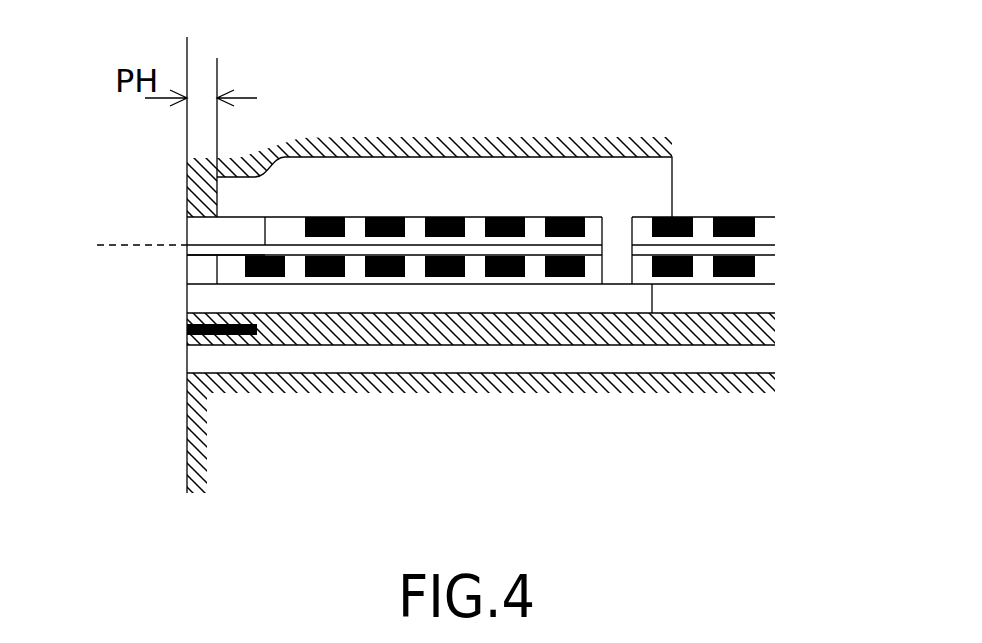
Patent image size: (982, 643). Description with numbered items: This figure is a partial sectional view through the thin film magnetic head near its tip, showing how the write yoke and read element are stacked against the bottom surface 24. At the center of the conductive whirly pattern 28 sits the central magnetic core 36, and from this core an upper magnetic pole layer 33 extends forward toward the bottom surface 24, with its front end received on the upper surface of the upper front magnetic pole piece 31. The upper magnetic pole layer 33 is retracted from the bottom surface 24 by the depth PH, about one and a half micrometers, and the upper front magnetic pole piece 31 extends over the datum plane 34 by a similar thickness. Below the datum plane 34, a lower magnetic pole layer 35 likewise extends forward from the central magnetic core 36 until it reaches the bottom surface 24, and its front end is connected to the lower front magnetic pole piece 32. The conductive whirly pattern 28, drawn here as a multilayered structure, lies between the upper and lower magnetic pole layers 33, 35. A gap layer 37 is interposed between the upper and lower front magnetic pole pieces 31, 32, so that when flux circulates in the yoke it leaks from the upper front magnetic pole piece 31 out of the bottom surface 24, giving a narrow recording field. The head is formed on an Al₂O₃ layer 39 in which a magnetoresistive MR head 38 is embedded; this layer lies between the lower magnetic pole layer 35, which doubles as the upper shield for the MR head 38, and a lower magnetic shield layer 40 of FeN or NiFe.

The bottom surface 24 is at (183, 437).
The conductive whirly pattern 28 is at (722, 216).
The upper front magnetic pole piece 31 is at (186, 230).
The lower front magnetic pole piece 32 is at (186, 276).
The upper magnetic pole layer 33 is at (341, 157).
The datum plane 34 is at (117, 245).
The lower magnetic pole layer 35 is at (543, 308).
The central magnetic core 36 is at (633, 274).
The gap layer 37 is at (178, 263).
The MR head 38 is at (186, 332).
The Al₂O₃ layer 39 is at (286, 345).
The lower magnetic shield layer 40 is at (347, 370).